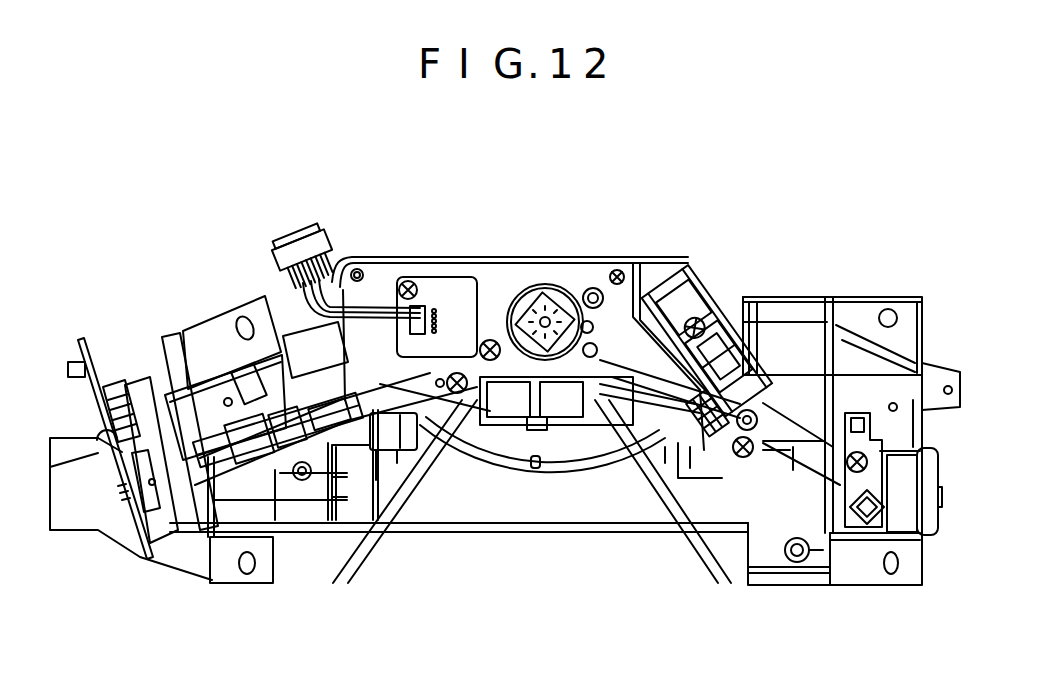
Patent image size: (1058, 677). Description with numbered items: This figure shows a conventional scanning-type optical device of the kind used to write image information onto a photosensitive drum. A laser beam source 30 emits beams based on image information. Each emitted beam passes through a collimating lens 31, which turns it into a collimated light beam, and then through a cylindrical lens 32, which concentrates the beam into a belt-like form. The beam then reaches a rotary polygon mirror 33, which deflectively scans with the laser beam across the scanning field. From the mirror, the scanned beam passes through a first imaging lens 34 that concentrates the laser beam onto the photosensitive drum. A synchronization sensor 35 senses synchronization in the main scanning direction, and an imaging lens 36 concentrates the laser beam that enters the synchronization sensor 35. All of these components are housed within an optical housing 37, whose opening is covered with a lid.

The laser beam source 30 is at (166, 373).
The collimating lens 31 is at (253, 297).
The cylindrical lens 32 is at (322, 410).
The rotary polygon mirror 33 is at (556, 293).
The first imaging lens 34 is at (478, 445).
The synchronization sensor 35 is at (690, 268).
The imaging lens 36 is at (740, 313).
The optical housing 37 is at (842, 360).